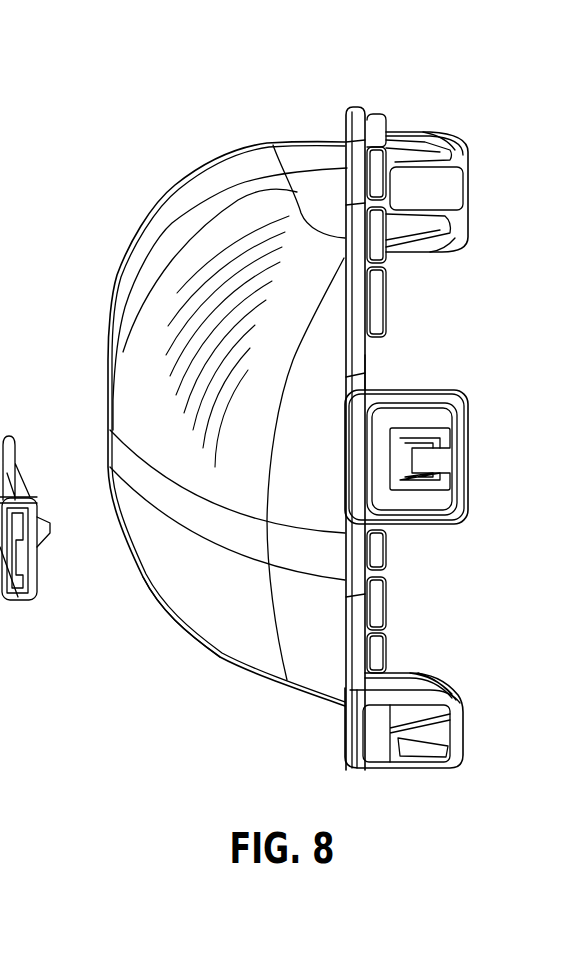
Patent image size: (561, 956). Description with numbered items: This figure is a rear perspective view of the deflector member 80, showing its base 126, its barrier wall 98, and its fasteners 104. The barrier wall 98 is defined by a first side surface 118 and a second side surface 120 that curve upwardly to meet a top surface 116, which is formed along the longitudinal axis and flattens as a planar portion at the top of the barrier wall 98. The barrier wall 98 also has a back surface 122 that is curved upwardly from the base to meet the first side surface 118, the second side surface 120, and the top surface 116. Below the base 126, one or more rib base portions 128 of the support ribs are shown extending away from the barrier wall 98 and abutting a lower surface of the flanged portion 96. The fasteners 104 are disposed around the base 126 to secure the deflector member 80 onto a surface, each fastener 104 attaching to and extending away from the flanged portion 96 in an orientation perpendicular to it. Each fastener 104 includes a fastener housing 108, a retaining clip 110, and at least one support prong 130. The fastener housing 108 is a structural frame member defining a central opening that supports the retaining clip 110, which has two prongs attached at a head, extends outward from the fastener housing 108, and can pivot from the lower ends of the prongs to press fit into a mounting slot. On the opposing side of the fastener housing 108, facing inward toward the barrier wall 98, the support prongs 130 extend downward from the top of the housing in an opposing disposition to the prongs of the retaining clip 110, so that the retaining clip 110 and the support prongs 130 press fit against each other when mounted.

The deflector member 80 is at (356, 80).
The flanged portion 96 is at (351, 107).
The barrier wall 98 is at (140, 237).
The fastener 104 is at (464, 137).
The fastener housing 108 is at (457, 207).
The retaining clip 110 is at (449, 160).
The top surface 116 is at (107, 433).
The first side surface 118 is at (141, 577).
The second side surface 120 is at (210, 207).
The back surface 122 is at (287, 643).
The base 126 is at (373, 110).
The rib base portion 128 is at (373, 125).
The support prong 130 is at (426, 140).